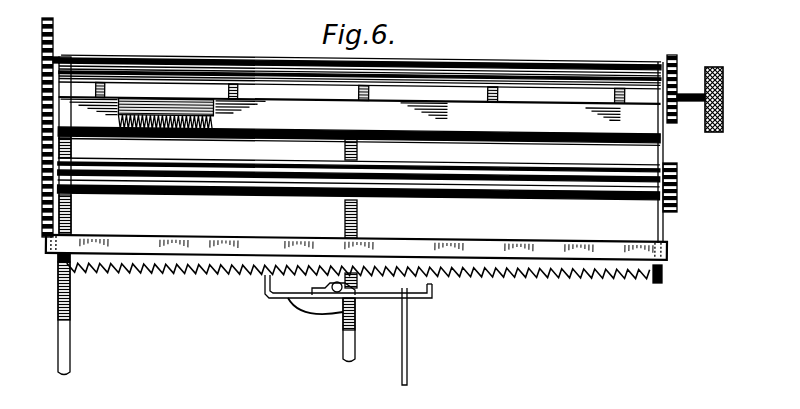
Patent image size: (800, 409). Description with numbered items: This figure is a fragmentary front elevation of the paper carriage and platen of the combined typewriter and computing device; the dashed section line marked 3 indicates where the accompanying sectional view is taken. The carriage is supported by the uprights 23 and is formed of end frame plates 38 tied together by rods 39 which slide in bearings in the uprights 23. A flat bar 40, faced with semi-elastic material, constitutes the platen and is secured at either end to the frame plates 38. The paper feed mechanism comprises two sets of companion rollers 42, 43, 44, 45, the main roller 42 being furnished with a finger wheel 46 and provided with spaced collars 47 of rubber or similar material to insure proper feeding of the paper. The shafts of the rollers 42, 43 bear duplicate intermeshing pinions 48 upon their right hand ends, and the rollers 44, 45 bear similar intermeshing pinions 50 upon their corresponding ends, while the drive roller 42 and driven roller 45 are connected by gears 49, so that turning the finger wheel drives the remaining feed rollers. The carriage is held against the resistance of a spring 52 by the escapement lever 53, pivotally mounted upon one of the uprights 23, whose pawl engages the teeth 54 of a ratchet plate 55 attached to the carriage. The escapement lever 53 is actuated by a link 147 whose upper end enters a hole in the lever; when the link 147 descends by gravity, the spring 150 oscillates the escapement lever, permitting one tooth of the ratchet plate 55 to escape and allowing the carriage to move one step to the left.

The section line 3- 3 is at (202, 320).
The uprights 23 is at (69, 298).
The end frame plates 38 is at (664, 152).
The rods 39 is at (359, 141).
The flat bar 40 is at (502, 119).
The main roller 42 is at (153, 97).
The companion roller 43 is at (588, 63).
The companion roller 44 is at (588, 202).
The driven roller 45 is at (585, 173).
The finger wheel 46 is at (724, 98).
The spaced collars 47 is at (233, 100).
The intermeshing pinions 48 is at (682, 107).
The gears 49 is at (42, 183).
The intermeshing pinions 50 is at (678, 200).
The spring 52 is at (165, 135).
The escapement lever 53 is at (390, 299).
The teeth 54 is at (232, 273).
The ratchet plate 55 is at (467, 248).
The link 147 is at (408, 357).
The spring 150 is at (315, 316).